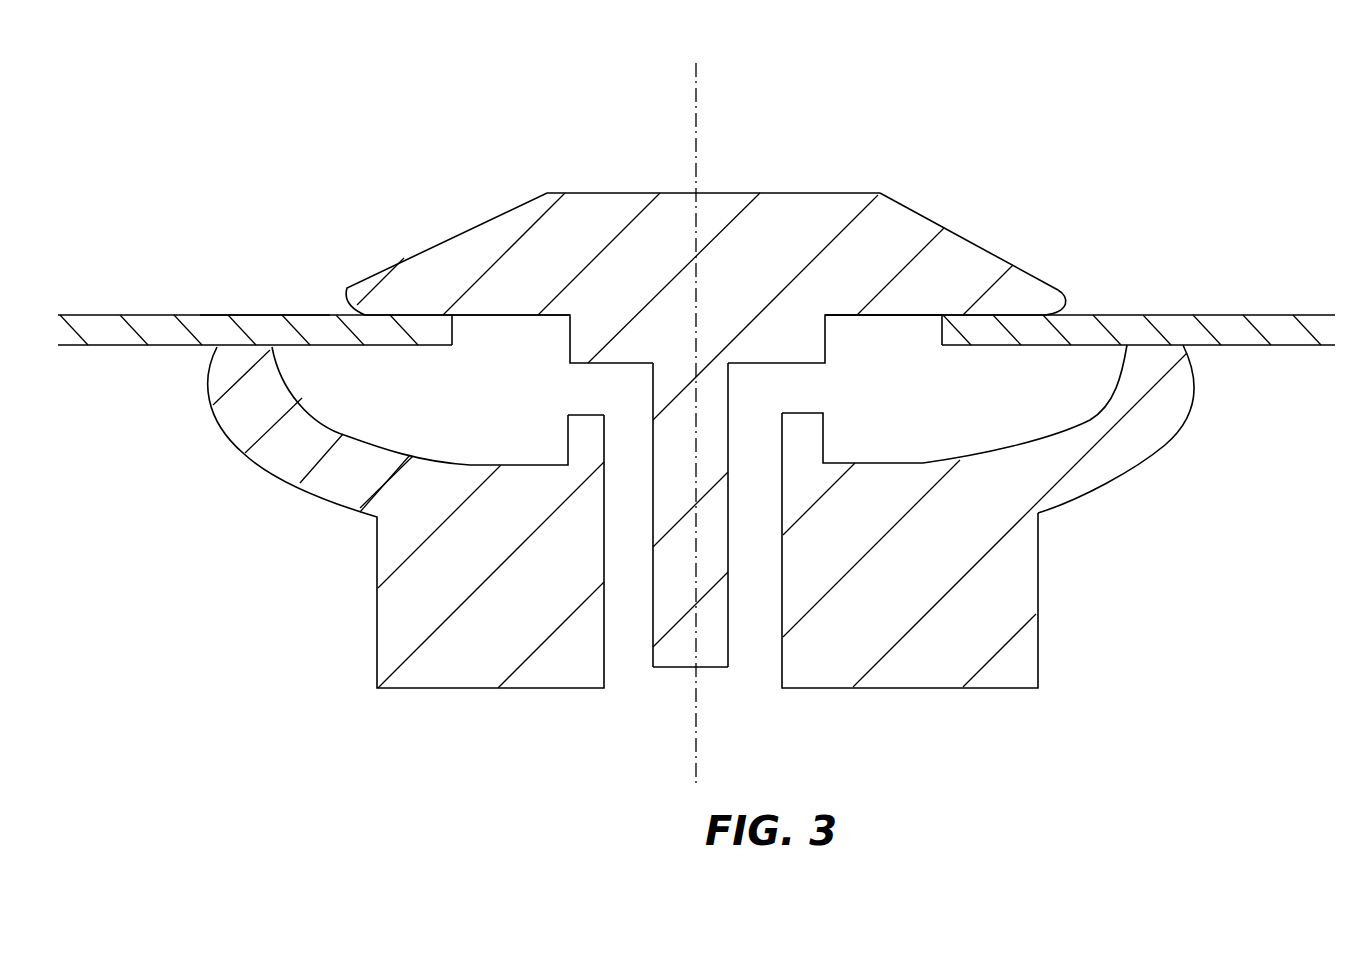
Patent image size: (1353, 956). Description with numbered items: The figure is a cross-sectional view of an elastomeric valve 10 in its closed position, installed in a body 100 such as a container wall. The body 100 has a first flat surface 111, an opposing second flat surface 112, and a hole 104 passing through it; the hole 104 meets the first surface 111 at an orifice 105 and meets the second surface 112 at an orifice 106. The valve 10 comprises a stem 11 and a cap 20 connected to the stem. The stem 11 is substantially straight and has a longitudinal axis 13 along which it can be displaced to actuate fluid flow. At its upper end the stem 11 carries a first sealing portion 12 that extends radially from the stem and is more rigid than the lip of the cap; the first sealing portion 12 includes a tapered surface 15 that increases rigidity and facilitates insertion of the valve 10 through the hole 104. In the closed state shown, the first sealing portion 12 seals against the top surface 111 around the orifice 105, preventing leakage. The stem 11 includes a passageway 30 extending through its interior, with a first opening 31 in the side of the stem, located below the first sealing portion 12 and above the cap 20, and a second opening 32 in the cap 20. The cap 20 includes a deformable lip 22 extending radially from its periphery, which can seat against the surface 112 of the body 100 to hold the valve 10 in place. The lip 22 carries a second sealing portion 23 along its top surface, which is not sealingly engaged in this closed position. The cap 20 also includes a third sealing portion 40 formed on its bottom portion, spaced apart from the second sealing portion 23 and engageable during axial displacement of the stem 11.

The valve 10 is at (922, 150).
The stem 11 is at (695, 306).
The first sealing portion 12 is at (980, 238).
The longitudinal axis 13 is at (700, 735).
The tapered surface 15 is at (1017, 265).
The cap 20 is at (984, 520).
The deformable lip 22 is at (1110, 488).
The second sealing portion 23 is at (1092, 415).
The passageway 30 is at (672, 515).
The first opening 31 is at (586, 398).
The second opening 32 is at (672, 648).
The third sealing portion 40 is at (445, 688).
The body 100 is at (158, 328).
The hole 104 is at (883, 335).
The orifice 105 is at (460, 317).
The orifice 106 is at (942, 345).
The first flat surface 111 is at (255, 317).
The second flat surface 112 is at (1272, 345).